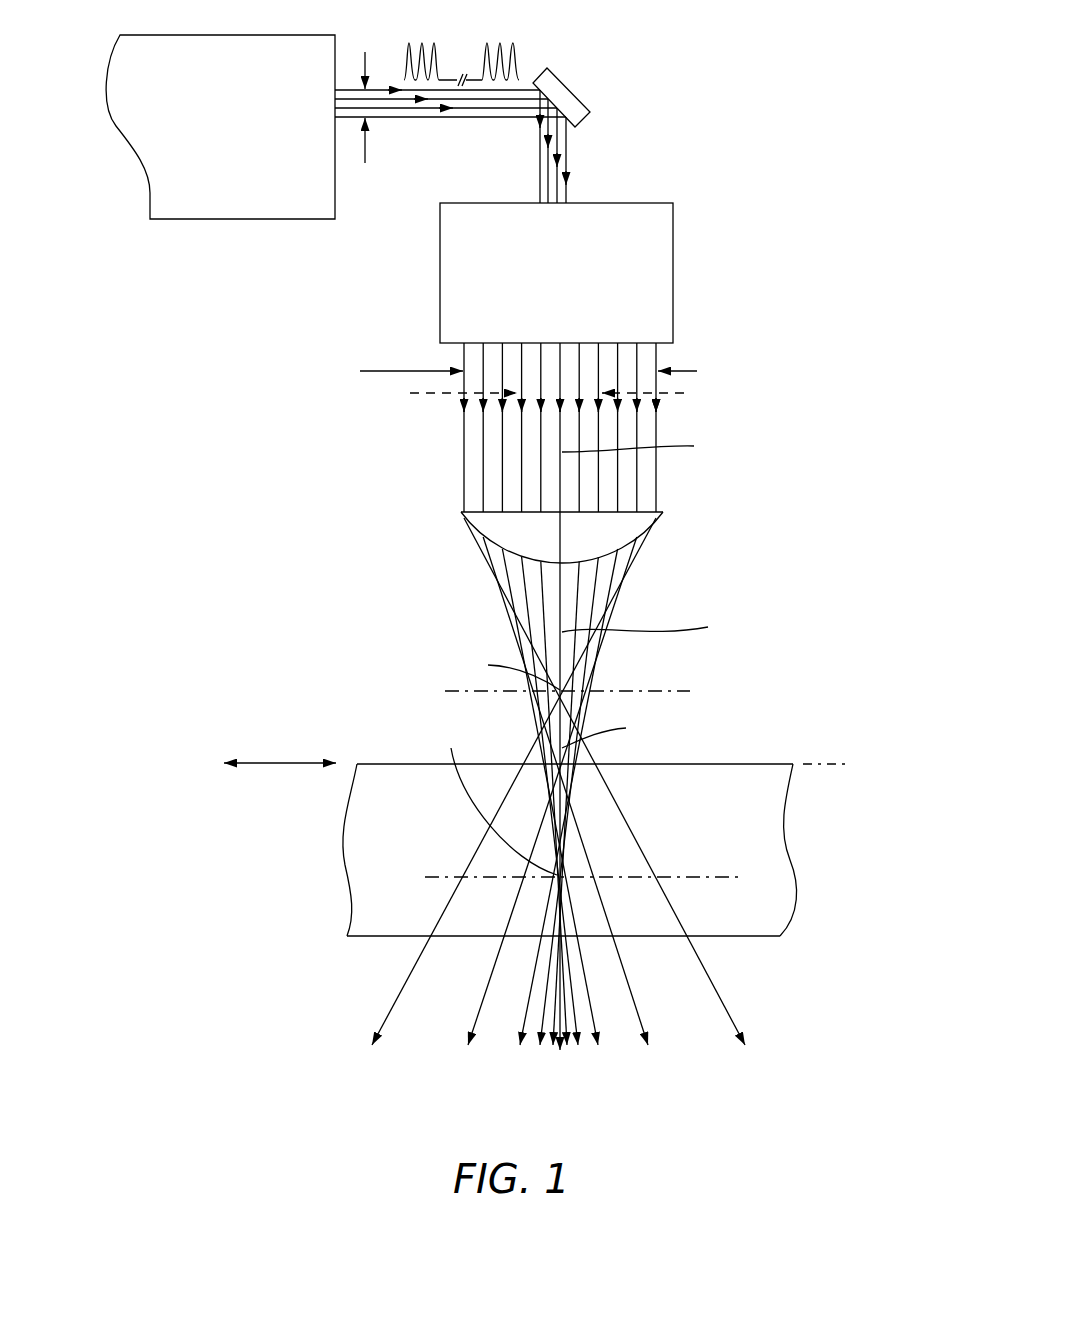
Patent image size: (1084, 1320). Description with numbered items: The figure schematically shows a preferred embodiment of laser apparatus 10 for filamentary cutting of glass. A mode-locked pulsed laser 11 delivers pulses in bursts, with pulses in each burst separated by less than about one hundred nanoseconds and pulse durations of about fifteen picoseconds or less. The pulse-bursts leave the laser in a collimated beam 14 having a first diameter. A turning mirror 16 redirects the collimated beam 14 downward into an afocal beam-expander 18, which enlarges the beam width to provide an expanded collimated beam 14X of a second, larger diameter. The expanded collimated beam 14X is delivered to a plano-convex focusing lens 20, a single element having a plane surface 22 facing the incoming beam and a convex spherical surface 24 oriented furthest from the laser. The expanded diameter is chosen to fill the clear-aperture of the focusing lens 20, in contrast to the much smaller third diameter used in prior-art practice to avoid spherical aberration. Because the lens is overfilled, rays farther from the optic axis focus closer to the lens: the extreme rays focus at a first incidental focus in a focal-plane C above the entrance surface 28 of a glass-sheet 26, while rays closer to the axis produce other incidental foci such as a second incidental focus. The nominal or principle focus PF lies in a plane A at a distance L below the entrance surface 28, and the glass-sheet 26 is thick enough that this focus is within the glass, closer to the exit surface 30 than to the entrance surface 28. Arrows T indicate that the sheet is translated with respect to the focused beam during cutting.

The laser apparatus 10 is at (204, 675).
The mode-locked pulsed laser 11 is at (235, 214).
The collimated beam 14 is at (437, 128).
The expanded collimated beam 14X is at (455, 443).
The turning mirror 16 is at (549, 84).
The afocal beam-expander 18 is at (632, 211).
The plano-convex focusing lens 20 is at (561, 533).
The plane surface 22 is at (648, 512).
The convex spherical surface 24 is at (483, 540).
The glass-sheet 26 is at (733, 757).
The entrance surface 28 is at (572, 844).
The exit surface 30 is at (738, 938).